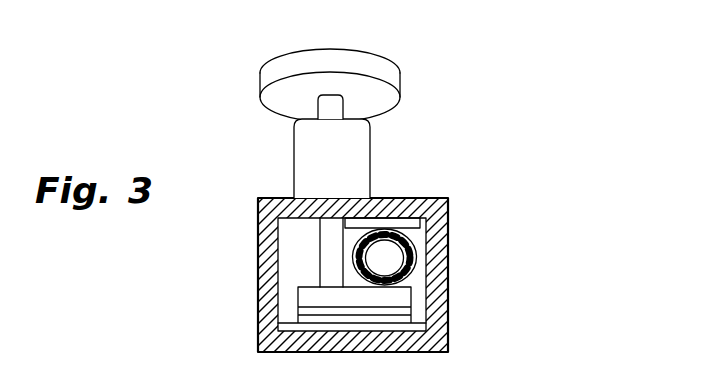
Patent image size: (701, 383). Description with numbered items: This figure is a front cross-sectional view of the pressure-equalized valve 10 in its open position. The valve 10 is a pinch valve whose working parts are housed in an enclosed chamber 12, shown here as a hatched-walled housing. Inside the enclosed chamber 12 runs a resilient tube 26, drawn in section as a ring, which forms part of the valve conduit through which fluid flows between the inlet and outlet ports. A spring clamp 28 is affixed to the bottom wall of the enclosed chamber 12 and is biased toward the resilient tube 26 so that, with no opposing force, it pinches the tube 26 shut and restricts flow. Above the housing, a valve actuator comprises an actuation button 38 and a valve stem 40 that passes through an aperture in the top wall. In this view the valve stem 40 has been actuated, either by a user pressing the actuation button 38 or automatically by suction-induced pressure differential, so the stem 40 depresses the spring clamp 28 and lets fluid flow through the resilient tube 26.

The pressure-equalized valve 10 is at (351, 193).
The enclosed chamber 12 is at (448, 254).
The resilient tube 26 is at (415, 270).
The spring clamp 28 is at (403, 296).
The actuation button 38 is at (343, 108).
The valve stem 40 is at (275, 73).